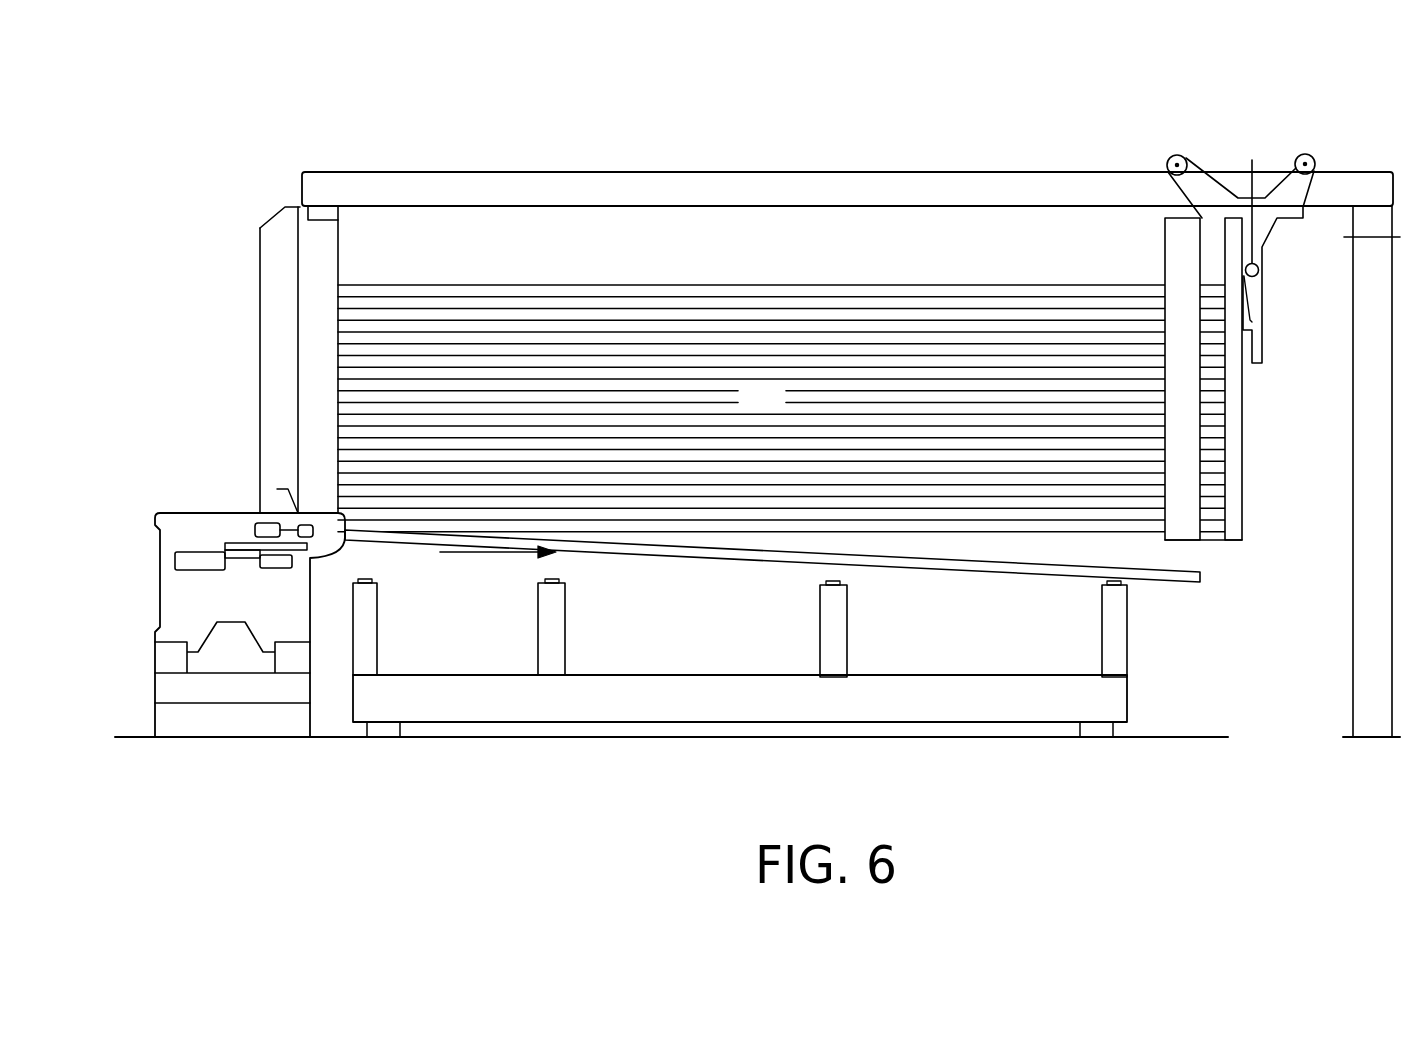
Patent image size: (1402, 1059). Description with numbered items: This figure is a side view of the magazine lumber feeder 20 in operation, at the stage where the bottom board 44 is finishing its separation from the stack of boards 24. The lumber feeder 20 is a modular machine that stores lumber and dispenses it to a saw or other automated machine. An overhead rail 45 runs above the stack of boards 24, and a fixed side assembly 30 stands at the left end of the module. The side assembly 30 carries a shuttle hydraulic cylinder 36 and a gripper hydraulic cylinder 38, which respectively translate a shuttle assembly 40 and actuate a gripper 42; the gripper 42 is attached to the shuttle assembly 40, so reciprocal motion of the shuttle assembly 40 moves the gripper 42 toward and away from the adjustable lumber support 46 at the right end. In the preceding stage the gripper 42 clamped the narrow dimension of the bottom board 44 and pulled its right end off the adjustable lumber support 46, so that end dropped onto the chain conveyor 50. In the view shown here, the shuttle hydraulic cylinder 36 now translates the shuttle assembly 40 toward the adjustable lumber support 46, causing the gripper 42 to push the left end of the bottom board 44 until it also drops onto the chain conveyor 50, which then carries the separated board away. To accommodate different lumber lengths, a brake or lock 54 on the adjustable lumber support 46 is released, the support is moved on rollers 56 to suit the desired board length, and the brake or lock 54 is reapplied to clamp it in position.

The magazine lumber feeder 20 is at (750, 124).
The stack of boards 24 is at (781, 408).
The fixed side assembly 30 is at (296, 396).
The shuttle hydraulic cylinder 36 is at (190, 555).
The gripper hydraulic cylinder 38 is at (255, 530).
The shuttle assembly 40 is at (277, 568).
The gripper 42 is at (311, 538).
The bottom board 44 is at (1170, 583).
The overhead rail 45 is at (891, 186).
The adjustable lumber support 46 is at (1242, 430).
The chain conveyor 50 is at (538, 642).
The brake or lock 54 is at (1252, 160).
The rollers 56 is at (1177, 155).